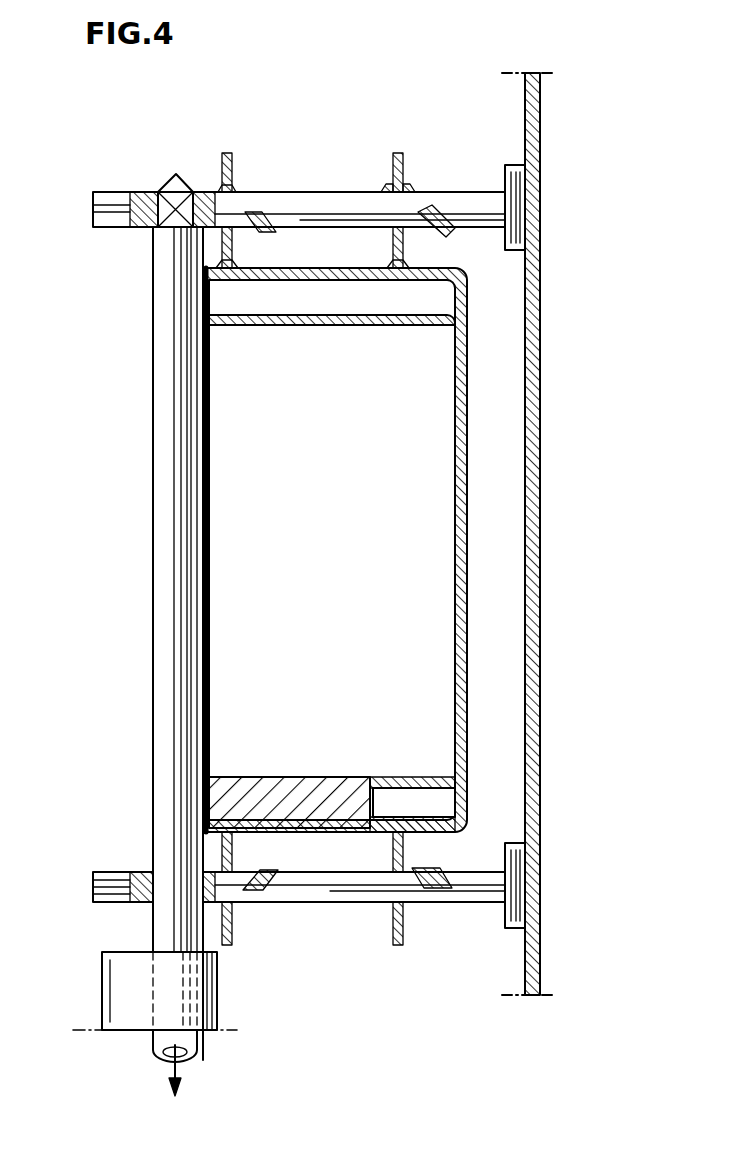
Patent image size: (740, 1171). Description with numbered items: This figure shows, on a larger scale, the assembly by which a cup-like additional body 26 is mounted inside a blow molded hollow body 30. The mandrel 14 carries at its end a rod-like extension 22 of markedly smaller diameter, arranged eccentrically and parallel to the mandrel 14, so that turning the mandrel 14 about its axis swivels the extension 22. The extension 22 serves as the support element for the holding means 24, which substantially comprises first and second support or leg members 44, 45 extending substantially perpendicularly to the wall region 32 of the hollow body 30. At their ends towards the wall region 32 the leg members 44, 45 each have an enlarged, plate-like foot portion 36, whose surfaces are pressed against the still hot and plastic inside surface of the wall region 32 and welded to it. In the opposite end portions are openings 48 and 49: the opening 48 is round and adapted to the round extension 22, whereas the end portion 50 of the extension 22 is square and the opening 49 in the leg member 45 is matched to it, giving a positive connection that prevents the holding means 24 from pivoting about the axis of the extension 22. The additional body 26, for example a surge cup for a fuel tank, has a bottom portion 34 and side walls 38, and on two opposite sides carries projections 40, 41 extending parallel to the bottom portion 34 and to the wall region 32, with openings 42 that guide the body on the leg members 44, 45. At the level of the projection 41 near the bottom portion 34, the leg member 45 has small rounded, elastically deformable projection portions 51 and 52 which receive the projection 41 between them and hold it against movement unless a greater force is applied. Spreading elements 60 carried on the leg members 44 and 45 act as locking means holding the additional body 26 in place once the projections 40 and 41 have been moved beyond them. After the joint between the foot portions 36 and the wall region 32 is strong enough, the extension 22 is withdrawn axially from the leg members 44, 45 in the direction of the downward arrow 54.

The mandrel 14 is at (110, 990).
The extension 22 is at (156, 455).
The holding means 24 is at (303, 186).
The additional body 26 is at (238, 778).
The hollow body 30 is at (530, 110).
The wall region 32 is at (510, 464).
The bottom portion 34 is at (468, 385).
The enlarged foot portion 36 is at (520, 190).
The side walls 38 is at (350, 282).
The projection 40 is at (230, 945).
The projection 41 is at (227, 153).
The opening 42 is at (232, 215).
The first support or leg member 44 is at (345, 903).
The second support or leg member 45 is at (352, 192).
The opening 48 is at (148, 888).
The opening 49 is at (165, 227).
The end portion 50 is at (178, 178).
The projection portion 51 is at (385, 187).
The projection portion 52 is at (409, 187).
The arrow 54 is at (190, 1062).
The spreading element 60 is at (278, 236).